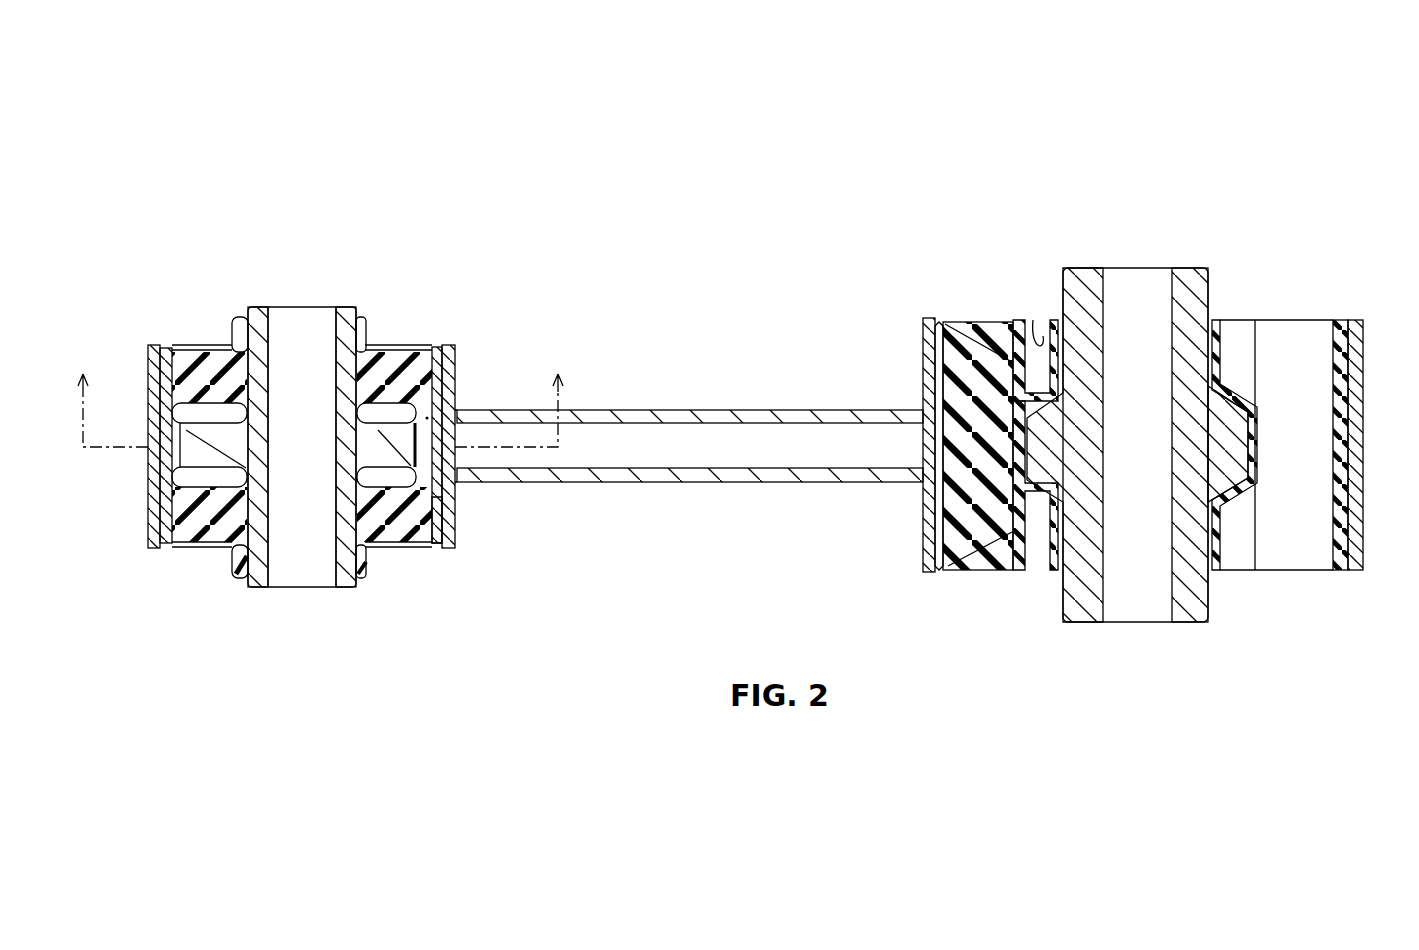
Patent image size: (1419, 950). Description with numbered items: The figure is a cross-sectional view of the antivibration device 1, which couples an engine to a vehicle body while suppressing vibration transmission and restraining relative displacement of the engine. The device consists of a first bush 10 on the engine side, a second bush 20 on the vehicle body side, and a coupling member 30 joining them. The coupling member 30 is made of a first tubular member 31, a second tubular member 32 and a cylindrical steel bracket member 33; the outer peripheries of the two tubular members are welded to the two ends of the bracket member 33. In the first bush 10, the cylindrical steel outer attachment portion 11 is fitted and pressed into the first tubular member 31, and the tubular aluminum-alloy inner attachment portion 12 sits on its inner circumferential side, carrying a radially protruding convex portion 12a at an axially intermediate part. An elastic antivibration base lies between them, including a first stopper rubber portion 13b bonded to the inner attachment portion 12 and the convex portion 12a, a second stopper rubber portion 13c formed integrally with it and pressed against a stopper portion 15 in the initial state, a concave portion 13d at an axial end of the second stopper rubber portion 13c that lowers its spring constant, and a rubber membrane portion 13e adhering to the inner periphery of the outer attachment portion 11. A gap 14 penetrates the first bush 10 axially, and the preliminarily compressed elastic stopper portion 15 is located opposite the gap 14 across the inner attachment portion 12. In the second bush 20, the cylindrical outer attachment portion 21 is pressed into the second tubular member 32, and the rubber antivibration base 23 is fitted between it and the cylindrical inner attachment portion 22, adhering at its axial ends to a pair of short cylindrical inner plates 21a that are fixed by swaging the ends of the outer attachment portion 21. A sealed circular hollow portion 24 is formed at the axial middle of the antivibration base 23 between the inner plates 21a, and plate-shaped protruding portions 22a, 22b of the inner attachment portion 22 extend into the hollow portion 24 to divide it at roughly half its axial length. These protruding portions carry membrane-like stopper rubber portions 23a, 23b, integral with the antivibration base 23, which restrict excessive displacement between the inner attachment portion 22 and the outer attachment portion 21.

The antivibration device 1 is at (929, 126).
The first bush 10 is at (1244, 217).
The outer attachment portion 11 is at (990, 330).
The inner attachment portion 12 is at (1178, 358).
The convex portion 12a is at (1233, 420).
The first stopper rubber portion 13b is at (1256, 453).
The second stopper rubber portion 13c is at (1017, 533).
The concave portion 13d is at (1037, 332).
The rubber membrane portion 13e is at (1338, 493).
The gap 14 is at (1258, 553).
The stopper portion 15 is at (990, 533).
The second bush 20 is at (399, 228).
The outer attachment portion 21 is at (440, 346).
The inner plates 21a is at (433, 541).
The inner attachment portion 22 is at (348, 323).
The protruding portions 22a is at (408, 448).
The protruding portions 22b is at (200, 447).
The antivibration base 23 is at (203, 373).
The stopper rubber portions 23a is at (403, 422).
The stopper rubber portions 23b is at (176, 446).
The hollow portion 24 is at (457, 403).
The coupling member 30 is at (731, 337).
The first tubular member 31 is at (930, 353).
The second tubular member 32 is at (447, 368).
The bracket member 33 is at (652, 415).